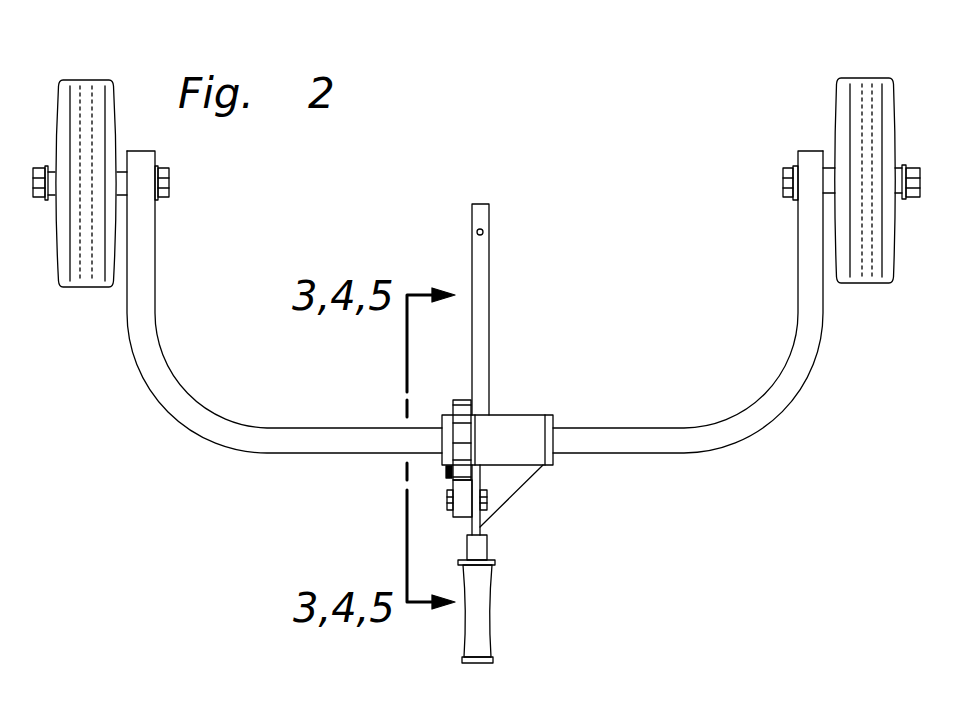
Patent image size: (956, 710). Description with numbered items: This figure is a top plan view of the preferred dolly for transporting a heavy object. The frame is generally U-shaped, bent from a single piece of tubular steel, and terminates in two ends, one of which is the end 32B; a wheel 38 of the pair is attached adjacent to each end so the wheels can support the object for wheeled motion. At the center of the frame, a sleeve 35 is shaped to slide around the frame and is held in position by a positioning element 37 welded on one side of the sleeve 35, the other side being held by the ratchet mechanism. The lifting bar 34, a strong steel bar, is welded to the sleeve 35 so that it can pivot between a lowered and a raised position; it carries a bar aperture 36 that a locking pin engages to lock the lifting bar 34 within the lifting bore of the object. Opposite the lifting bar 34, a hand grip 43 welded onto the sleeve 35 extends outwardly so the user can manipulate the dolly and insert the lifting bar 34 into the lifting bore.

The end of frame 32B is at (141, 158).
The lifting bar 34 is at (486, 286).
The sleeve 35 is at (517, 450).
The bar aperture 36 is at (484, 232).
The positioning element 37 is at (550, 440).
The wheel 38 is at (865, 92).
The hand grip 43 is at (488, 617).